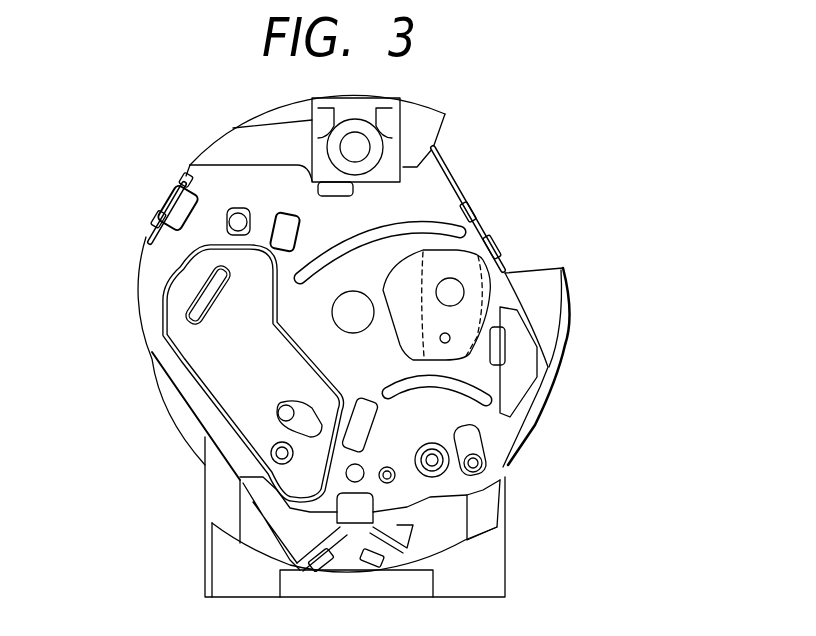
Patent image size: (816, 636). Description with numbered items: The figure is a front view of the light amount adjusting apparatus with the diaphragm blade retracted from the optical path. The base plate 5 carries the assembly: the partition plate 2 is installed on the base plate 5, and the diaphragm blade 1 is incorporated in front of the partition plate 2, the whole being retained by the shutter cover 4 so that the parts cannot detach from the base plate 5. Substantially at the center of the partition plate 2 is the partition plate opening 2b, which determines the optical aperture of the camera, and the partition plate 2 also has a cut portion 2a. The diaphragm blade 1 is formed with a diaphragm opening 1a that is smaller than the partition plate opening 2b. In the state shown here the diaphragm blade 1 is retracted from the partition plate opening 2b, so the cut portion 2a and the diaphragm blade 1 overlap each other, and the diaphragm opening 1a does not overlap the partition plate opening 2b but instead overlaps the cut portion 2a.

The diaphragm blade 1 is at (460, 280).
The diaphragm opening 1a is at (453, 290).
The partition plate 2 is at (373, 263).
The cut portion 2a is at (465, 372).
The partition plate opening 2b is at (350, 310).
The shutter cover 4 is at (157, 270).
The base plate 5 is at (485, 570).